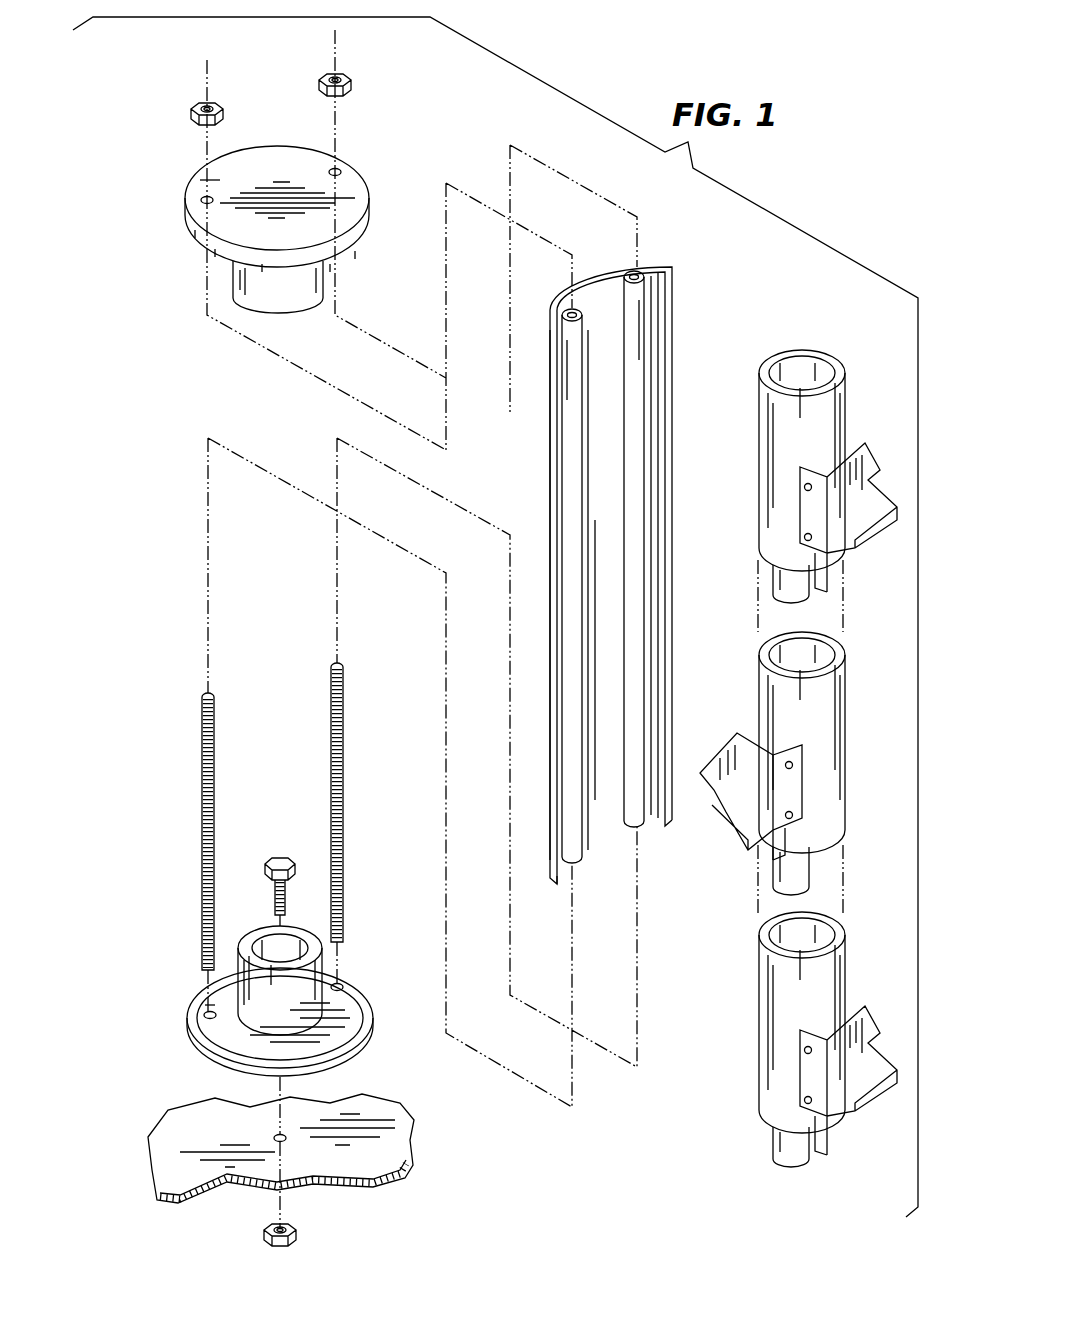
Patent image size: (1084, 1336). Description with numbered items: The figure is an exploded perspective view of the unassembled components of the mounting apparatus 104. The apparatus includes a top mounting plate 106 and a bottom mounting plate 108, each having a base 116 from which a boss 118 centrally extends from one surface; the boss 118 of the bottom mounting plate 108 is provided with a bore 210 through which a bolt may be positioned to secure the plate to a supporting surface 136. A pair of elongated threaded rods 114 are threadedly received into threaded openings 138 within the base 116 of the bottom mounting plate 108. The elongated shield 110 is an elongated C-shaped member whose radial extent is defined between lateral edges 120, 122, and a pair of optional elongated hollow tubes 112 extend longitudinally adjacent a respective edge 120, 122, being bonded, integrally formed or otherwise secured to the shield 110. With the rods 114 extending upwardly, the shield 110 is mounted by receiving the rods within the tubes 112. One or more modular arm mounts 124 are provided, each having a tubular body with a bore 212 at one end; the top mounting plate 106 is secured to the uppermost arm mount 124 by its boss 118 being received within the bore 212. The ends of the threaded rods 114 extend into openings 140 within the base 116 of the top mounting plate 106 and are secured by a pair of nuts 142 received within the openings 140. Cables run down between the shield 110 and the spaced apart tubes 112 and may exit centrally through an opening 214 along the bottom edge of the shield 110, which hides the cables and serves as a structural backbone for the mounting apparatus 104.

The mounting apparatus 104 is at (788, 189).
The top mounting plate 106 is at (371, 210).
The bottom mounting plate 108 is at (370, 1040).
The elongated shield 110 is at (613, 558).
The elongated hollow tubes 112 is at (572, 380).
The threaded rods 114 is at (200, 783).
The base 116 is at (266, 155).
The boss 118 is at (294, 313).
The lateral edge 120 is at (675, 286).
The lateral edge 122 is at (550, 464).
The modular arm mount 124 is at (848, 413).
The supporting surface 136 is at (166, 1130).
The threaded openings 138 is at (345, 989).
The openings 140 is at (203, 197).
The nuts 142 is at (192, 117).
The bore 210 is at (268, 940).
The bore 212 is at (796, 362).
The opening 214 is at (589, 835).